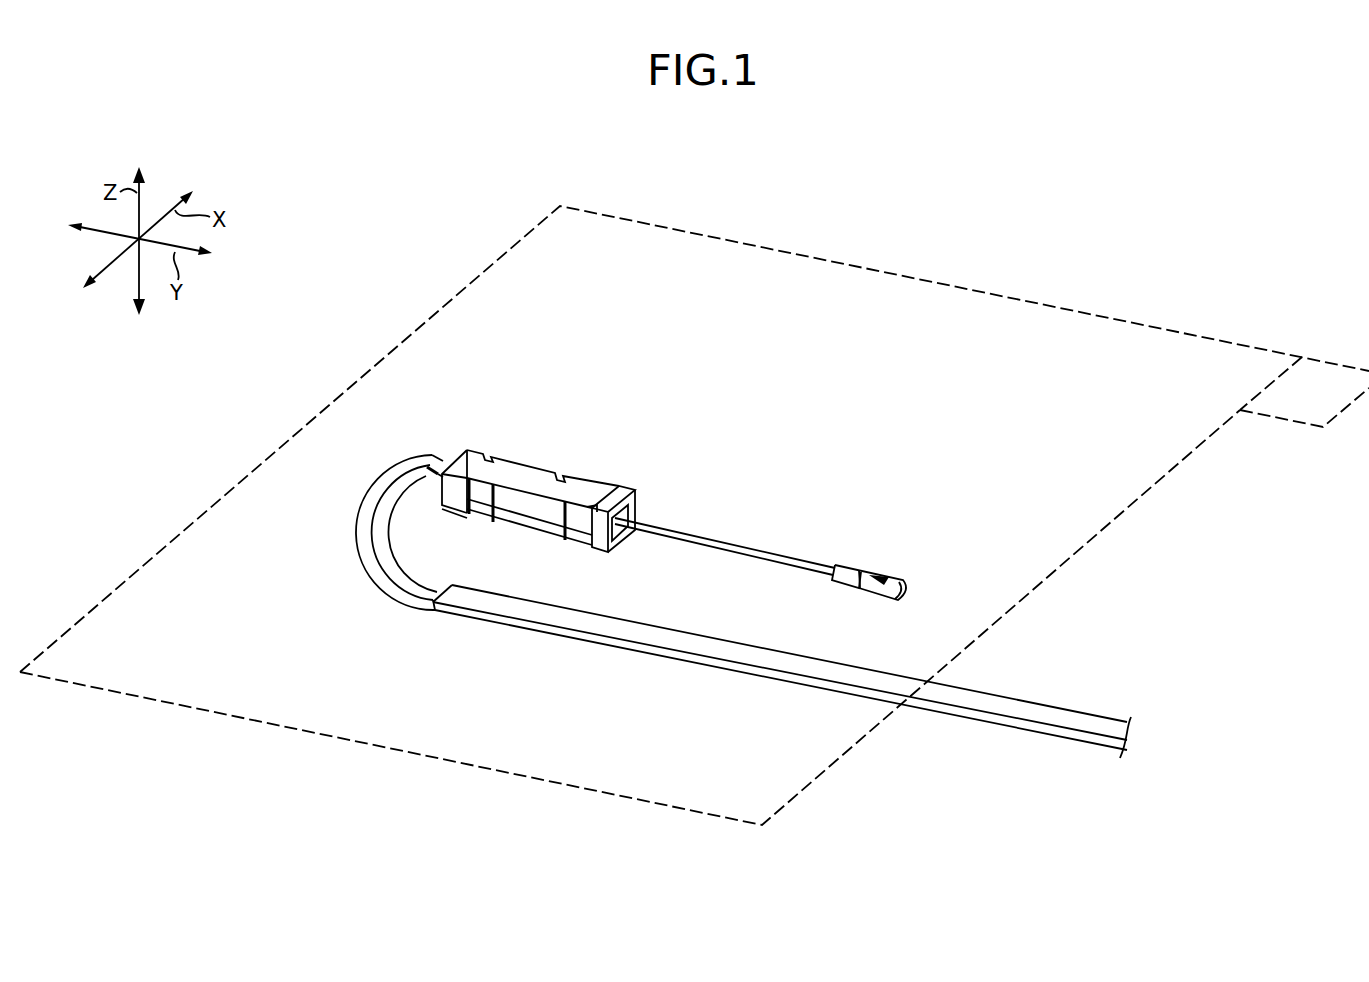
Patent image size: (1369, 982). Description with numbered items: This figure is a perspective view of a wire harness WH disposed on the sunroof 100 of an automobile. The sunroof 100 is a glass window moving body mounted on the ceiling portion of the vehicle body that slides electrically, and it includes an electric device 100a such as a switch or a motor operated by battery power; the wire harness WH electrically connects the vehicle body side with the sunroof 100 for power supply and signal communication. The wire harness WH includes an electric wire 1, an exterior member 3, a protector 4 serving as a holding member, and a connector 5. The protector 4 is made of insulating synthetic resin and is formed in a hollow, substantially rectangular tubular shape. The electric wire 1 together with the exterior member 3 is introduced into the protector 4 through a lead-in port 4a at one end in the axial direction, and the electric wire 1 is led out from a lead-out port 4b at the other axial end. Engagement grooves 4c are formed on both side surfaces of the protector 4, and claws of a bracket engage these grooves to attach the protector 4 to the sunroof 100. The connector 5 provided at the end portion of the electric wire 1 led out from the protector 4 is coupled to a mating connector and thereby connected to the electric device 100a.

The sunroof 100 is at (1023, 297).
The electric device 100a is at (1328, 360).
The wire harness WH is at (722, 440).
The electric wire 1 is at (743, 543).
The exterior member 3 is at (493, 613).
The protector 4 is at (546, 464).
The lead-in port 4a is at (447, 458).
The lead-out port 4b is at (637, 518).
The engagement grooves 4c is at (478, 495).
The connector 5 is at (852, 568).